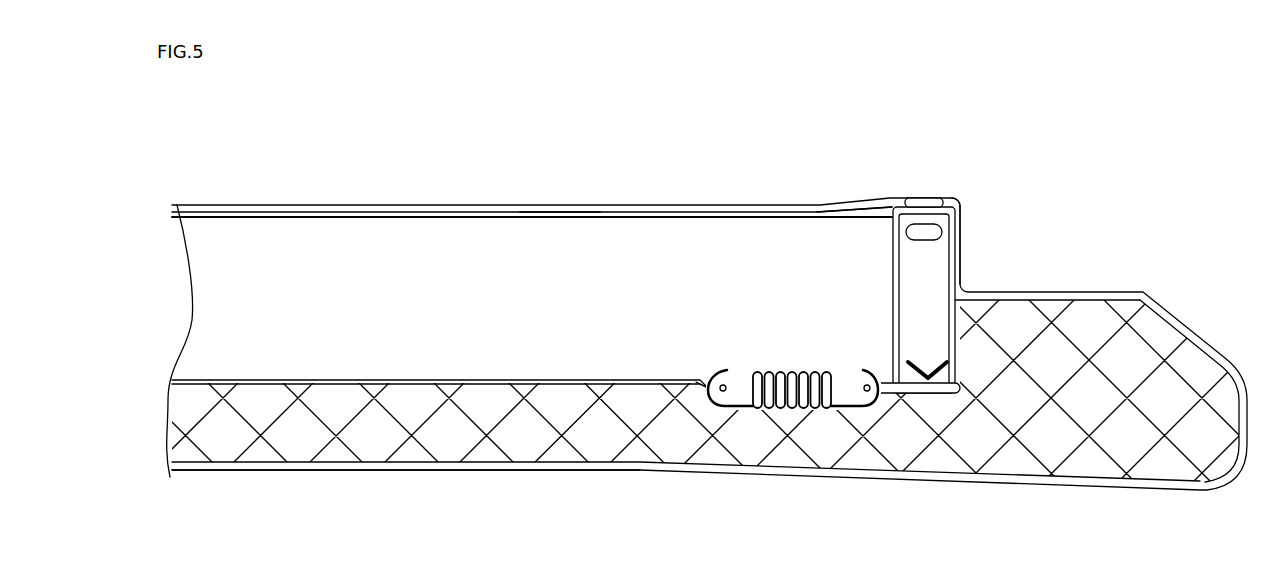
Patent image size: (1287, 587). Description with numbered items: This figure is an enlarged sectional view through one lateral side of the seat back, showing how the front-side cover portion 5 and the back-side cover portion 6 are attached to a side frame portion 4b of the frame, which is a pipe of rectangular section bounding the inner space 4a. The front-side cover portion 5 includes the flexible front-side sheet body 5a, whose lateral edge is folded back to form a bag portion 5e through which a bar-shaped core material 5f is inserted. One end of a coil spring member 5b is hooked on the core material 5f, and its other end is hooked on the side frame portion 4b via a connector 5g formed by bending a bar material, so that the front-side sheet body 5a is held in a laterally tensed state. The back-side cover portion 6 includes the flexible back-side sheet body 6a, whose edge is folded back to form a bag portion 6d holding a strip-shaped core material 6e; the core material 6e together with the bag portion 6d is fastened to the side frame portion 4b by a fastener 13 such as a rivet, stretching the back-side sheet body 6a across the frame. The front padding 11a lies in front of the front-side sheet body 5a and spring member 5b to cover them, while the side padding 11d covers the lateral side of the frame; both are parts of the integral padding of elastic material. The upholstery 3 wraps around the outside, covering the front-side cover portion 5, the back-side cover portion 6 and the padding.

The upholstery 3 is at (648, 205).
The inner space 4a is at (384, 300).
The side frame portion 4b is at (893, 298).
The front-side cover portion 5 is at (266, 473).
The front-side sheet body 5a is at (413, 380).
The spring member 5b is at (793, 367).
The bag portion 5e is at (704, 390).
The core material 5f is at (740, 370).
The connector 5g is at (878, 382).
The back-side cover portion 6 is at (362, 212).
The back-side sheet body 6a is at (542, 217).
The bag portion 6d is at (893, 198).
The core material 6e is at (962, 192).
The front padding 11a is at (452, 448).
The side padding 11d is at (1084, 320).
The fastener 13 is at (928, 198).